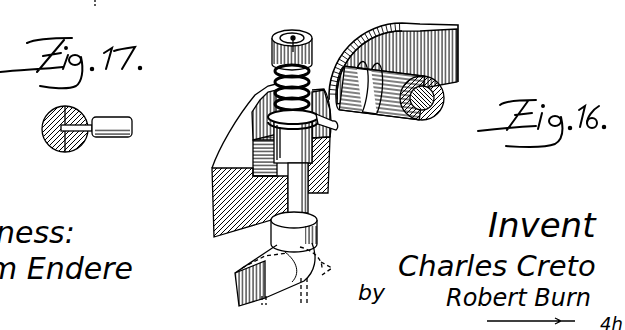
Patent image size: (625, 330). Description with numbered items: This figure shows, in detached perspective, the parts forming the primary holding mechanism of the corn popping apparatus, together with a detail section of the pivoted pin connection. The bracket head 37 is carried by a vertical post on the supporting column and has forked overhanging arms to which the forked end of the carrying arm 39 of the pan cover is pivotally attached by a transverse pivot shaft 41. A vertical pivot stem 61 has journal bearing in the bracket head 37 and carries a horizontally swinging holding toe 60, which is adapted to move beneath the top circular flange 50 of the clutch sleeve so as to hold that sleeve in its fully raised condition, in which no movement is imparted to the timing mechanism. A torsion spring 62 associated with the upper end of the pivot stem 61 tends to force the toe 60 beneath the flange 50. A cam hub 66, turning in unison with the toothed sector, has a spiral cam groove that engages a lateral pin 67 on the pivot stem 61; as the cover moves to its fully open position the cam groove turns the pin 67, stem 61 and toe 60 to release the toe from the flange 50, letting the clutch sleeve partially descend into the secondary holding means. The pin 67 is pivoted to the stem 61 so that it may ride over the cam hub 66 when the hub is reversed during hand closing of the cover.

In FIG. 16, the bracket head 37 is at (211, 196).
In FIG. 16, the carrying arm 39 is at (417, 28).
In FIG. 16, the transverse pivot shaft 41 is at (446, 94).
In FIG. 16, the top circular flange 50 is at (321, 262).
In FIG. 16, the holding toe 60 is at (236, 277).
In FIG. 17, the pivot stem 61 is at (50, 143).
In FIG. 16, the pivot stem 61 is at (328, 176).
In FIG. 16, the torsion spring 62 is at (276, 78).
In FIG. 16, the cam hub 66 is at (390, 119).
In FIG. 17, the lateral pin 67 is at (115, 137).
In FIG. 16, the lateral pin 67 is at (333, 123).